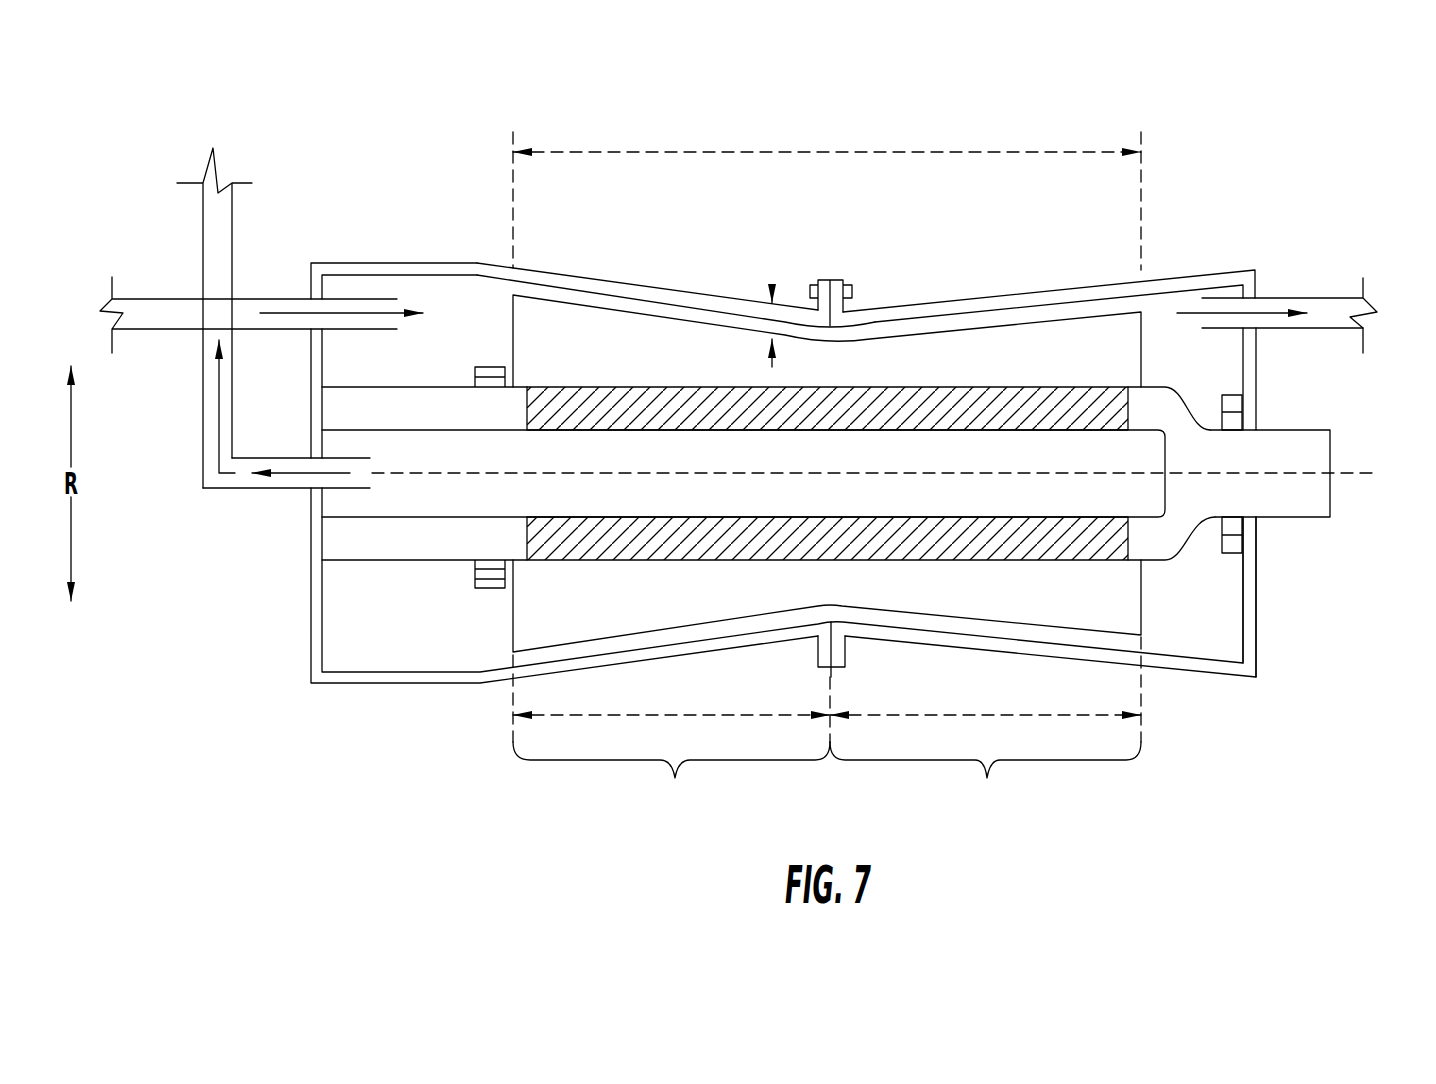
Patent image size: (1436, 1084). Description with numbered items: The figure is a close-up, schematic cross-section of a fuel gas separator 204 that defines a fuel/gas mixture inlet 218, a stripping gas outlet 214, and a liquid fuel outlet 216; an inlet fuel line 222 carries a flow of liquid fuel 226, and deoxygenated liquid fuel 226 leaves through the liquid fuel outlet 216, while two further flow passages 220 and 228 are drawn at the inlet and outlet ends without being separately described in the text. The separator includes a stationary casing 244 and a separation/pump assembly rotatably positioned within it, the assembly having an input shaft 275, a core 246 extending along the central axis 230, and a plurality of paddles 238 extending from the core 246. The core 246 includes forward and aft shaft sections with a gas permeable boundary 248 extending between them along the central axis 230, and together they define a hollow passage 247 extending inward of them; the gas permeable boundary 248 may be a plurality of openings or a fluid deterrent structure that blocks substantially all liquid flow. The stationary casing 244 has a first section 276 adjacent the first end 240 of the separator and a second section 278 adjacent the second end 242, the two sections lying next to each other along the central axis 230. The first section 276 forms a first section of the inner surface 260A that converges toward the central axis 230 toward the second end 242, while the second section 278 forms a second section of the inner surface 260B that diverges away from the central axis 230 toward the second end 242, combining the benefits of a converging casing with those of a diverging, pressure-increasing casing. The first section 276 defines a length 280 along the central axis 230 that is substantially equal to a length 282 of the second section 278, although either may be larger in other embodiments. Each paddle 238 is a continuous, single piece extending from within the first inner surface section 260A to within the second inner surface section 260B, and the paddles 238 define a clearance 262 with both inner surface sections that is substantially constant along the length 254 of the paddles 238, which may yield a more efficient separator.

The fuel gas separator 204 is at (970, 184).
The stripping gas outlet 214 is at (305, 494).
The liquid fuel outlet 216 is at (1254, 324).
The fuel/gas mixture inlet 218 is at (322, 307).
The return conduit 220 is at (217, 380).
The inlet fuel line 222 is at (1327, 303).
The flow of liquid fuel 226 is at (1262, 310).
The inlet conduit 228 is at (293, 312).
The central axis 230 is at (1348, 472).
The paddles 238 is at (960, 352).
The first end 240 is at (270, 635).
The second end 242 is at (1274, 607).
The stationary casing 244 is at (727, 298).
The core 246 is at (620, 566).
The hollow passage 247 is at (533, 492).
The gas permeable boundary 248 is at (730, 431).
The length of the paddles 254 is at (750, 150).
The first section of the inner surface 260A is at (637, 306).
The second section of the inner surface 260B is at (1038, 309).
The clearance 262 is at (770, 355).
The input shaft 275 is at (1313, 498).
The first section 276 is at (671, 781).
The second section 278 is at (985, 781).
The length of the first section 280 is at (670, 713).
The length of the second section 282 is at (927, 713).